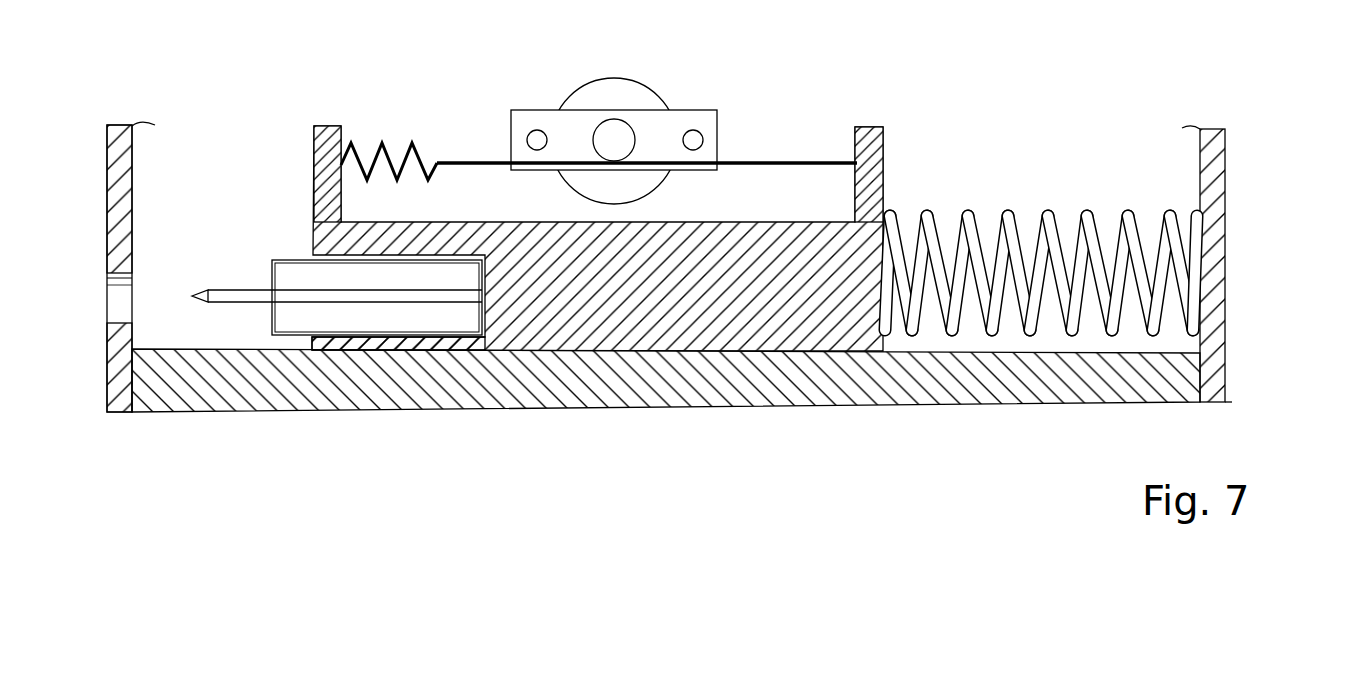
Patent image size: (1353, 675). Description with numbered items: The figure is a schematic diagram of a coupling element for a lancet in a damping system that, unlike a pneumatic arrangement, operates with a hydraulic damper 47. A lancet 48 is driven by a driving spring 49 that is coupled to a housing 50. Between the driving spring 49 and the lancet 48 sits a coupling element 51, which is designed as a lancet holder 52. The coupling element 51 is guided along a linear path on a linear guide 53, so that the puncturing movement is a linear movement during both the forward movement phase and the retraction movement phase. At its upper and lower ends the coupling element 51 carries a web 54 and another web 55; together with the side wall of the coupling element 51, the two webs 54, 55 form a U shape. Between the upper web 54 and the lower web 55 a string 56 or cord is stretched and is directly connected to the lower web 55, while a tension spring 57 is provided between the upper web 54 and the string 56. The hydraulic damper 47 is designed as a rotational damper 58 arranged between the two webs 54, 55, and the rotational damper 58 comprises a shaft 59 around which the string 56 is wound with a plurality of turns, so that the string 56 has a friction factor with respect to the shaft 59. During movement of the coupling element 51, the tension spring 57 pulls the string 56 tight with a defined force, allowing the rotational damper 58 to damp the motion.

The hydraulic damper 47 is at (645, 93).
The lancet 48 is at (286, 272).
The driving spring 49 is at (1032, 327).
The housing 50 is at (1213, 178).
The coupling element 51 is at (635, 322).
The lancet holder 52 is at (532, 322).
The linear guide 53 is at (720, 353).
The web 54 is at (330, 148).
The web 55 is at (868, 137).
The string 56 is at (797, 162).
The tension spring 57 is at (372, 145).
The rotational damper 58 is at (583, 108).
The shaft 59 is at (617, 137).